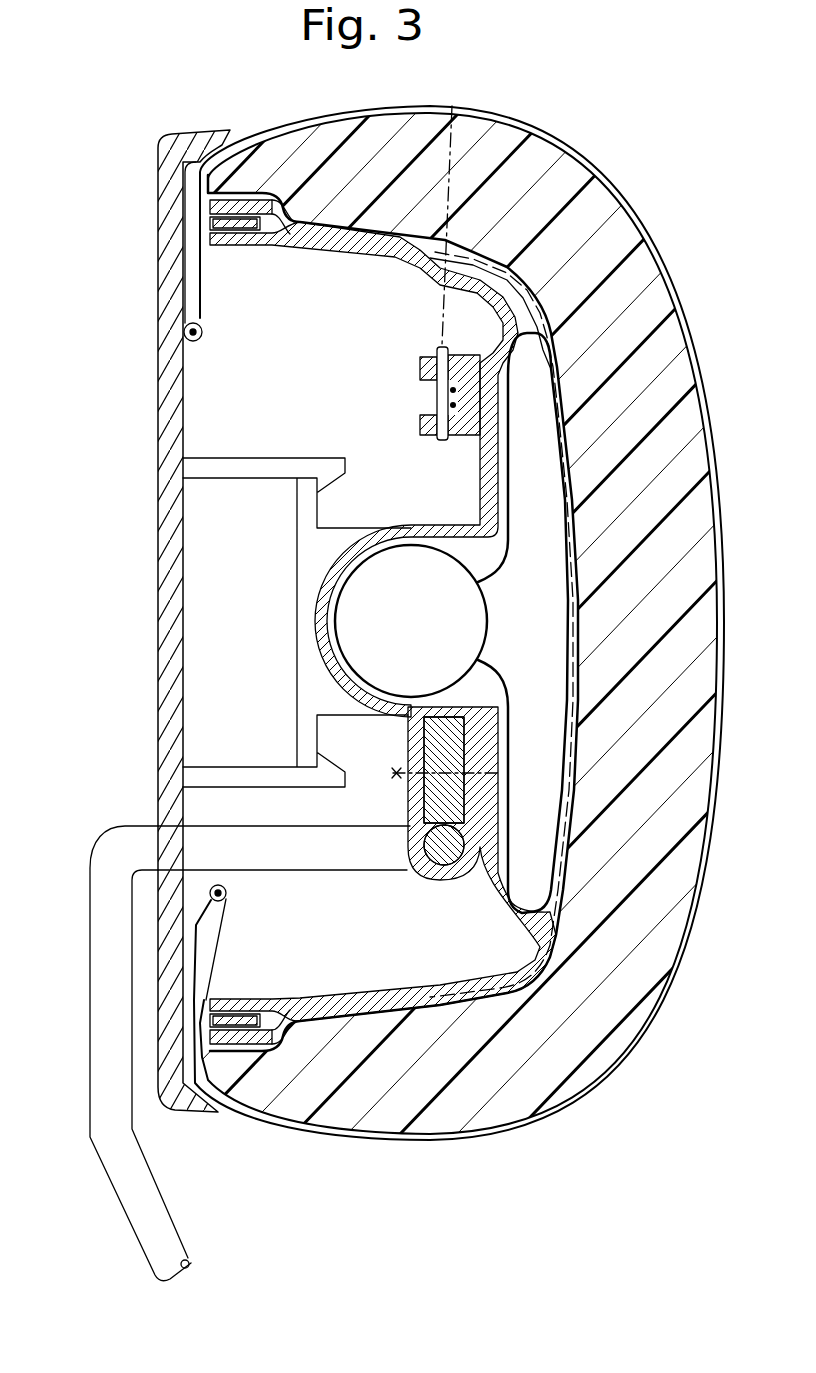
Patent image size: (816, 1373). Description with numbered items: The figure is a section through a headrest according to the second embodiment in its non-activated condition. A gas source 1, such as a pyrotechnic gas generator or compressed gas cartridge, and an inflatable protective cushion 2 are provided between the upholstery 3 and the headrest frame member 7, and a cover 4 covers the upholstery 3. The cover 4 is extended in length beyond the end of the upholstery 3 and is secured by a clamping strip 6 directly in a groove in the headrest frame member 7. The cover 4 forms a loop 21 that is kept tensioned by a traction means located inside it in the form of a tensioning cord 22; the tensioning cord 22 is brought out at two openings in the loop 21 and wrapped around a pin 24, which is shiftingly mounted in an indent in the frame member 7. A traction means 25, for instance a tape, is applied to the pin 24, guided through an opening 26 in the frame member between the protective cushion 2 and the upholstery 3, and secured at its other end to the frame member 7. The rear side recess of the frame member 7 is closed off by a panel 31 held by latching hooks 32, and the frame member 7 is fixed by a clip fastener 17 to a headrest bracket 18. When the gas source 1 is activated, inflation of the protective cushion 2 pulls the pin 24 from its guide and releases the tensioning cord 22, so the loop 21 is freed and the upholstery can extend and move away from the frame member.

The gas source 1 is at (347, 607).
The inflatable protective cushion 2 is at (545, 603).
The upholstery 3 is at (657, 740).
The cover 4 is at (612, 186).
The clamping strip 6 is at (250, 222).
The headrest frame member 7 is at (503, 492).
The clip fastener 17 is at (436, 878).
The headrest bracket 18 is at (92, 936).
The loop 21 is at (201, 311).
The tensioning cord 22 is at (188, 333).
The pin 24 is at (436, 352).
The traction means 25 is at (606, 300).
The opening 26 is at (463, 211).
The panel 31 is at (181, 630).
The latching hooks 32 is at (241, 470).